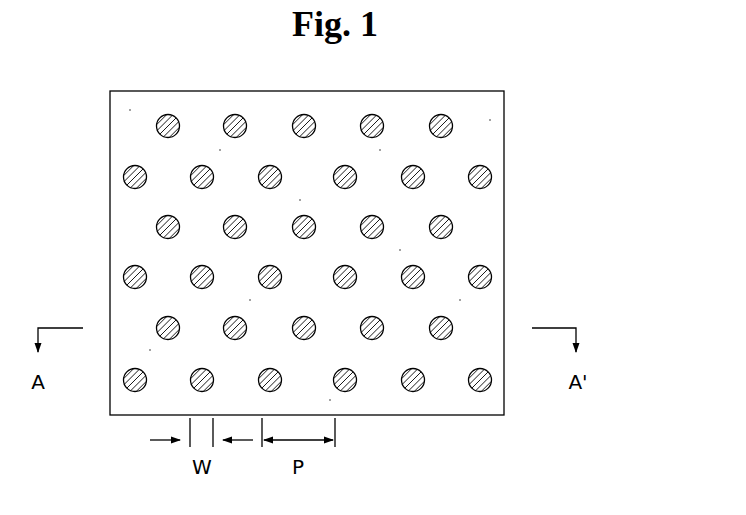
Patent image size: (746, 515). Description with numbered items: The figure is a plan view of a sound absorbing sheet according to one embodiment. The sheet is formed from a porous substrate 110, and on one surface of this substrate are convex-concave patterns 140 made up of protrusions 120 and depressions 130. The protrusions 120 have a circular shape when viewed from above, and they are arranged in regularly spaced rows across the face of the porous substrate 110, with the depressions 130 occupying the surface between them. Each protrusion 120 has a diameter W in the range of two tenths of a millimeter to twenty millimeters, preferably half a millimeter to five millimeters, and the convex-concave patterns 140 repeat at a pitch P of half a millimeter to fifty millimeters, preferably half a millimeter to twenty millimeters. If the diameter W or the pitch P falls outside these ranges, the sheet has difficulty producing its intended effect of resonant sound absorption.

The porous substrate 110 is at (505, 256).
The protrusions 120 is at (492, 177).
The depressions 130 is at (483, 212).
The convex-concave patterns 140 is at (375, 254).